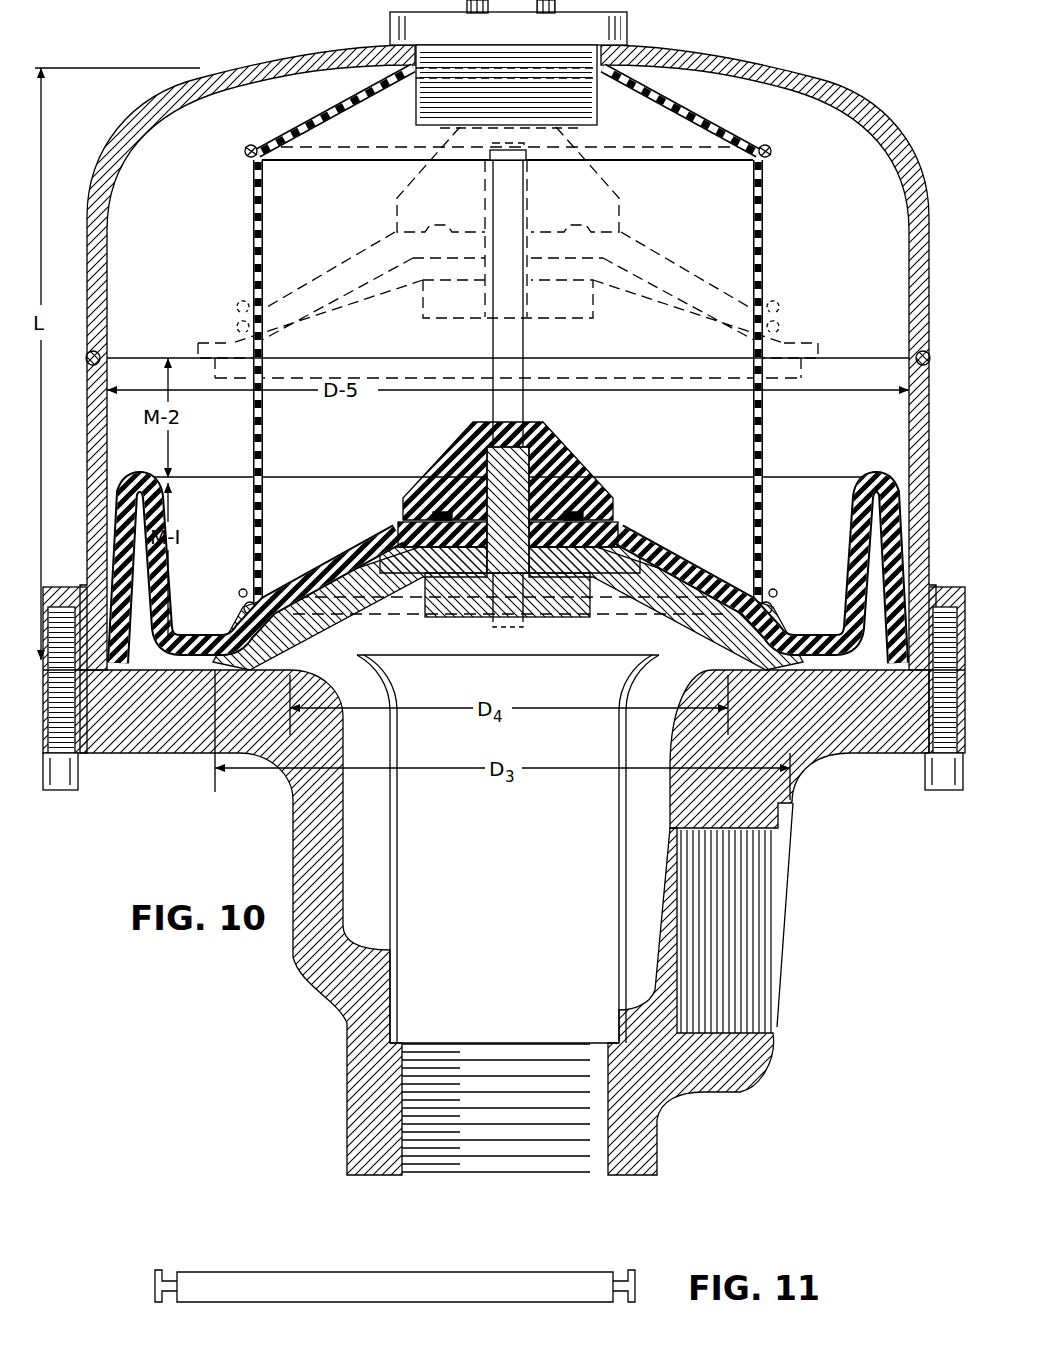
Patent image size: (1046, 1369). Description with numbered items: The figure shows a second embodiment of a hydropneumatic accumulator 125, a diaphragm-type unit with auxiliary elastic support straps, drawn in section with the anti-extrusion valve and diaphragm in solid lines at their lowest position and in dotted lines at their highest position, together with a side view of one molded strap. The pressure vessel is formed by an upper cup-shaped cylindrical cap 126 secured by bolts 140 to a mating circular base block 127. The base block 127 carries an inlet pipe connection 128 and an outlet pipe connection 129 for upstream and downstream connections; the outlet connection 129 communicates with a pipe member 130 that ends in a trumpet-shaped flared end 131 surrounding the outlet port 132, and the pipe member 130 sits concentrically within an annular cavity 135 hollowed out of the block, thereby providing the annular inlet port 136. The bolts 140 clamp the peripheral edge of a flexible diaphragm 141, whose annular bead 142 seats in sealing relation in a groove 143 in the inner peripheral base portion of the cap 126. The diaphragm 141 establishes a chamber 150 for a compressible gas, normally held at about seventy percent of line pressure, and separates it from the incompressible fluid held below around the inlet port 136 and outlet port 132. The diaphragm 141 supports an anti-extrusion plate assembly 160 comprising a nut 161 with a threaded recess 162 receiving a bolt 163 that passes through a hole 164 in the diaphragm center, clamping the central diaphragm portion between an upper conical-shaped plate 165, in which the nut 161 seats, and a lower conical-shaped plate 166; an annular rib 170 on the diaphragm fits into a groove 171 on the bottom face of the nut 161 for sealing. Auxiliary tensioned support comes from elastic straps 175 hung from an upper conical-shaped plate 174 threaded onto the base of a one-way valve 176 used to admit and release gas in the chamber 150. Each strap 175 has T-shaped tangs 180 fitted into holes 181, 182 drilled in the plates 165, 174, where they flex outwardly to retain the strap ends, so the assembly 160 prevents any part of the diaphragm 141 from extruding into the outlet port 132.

In FIG. 10, the hydropneumatic accumulator 125 is at (193, 75).
In FIG. 10, the upper cup-shaped cylindrical cap 126 is at (88, 444).
In FIG. 10, the circular base block 127 is at (838, 750).
In FIG. 10, the inlet pipe connection 128 is at (778, 905).
In FIG. 10, the outlet pipe connection 129 is at (583, 1180).
In FIG. 10, the pipe member 130 is at (618, 829).
In FIG. 10, the trumpet-shaped flared end 131 is at (368, 658).
In FIG. 10, the outlet port 132 is at (574, 654).
In FIG. 10, the annular cavity 135 is at (386, 805).
In FIG. 10, the annular inlet port 136 is at (346, 666).
In FIG. 10, the bolts 140 is at (78, 780).
In FIG. 10, the flexible diaphragm 141 is at (155, 626).
In FIG. 10, the annular bead 142 is at (94, 652).
In FIG. 10, the groove 143 is at (86, 587).
In FIG. 10, the chamber 150 is at (330, 221).
In FIG. 10, the anti-extrusion plate assembly 160 is at (614, 194).
In FIG. 10, the nut 161 is at (562, 445).
In FIG. 10, the threaded recess 162 is at (488, 460).
In FIG. 10, the bolt 163 is at (500, 582).
In FIG. 10, the hole 164 is at (425, 601).
In FIG. 10, the upper conical-shaped plate 165 is at (672, 560).
In FIG. 10, the lower conical-shaped plate 166 is at (265, 656).
In FIG. 10, the annular rib 170 is at (400, 528).
In FIG. 10, the groove 171 is at (452, 228).
In FIG. 10, the upper conical-shaped plate 174 is at (345, 110).
In FIG. 10, the elastic straps 175 is at (254, 257).
In FIG. 11, the elastic straps 175 is at (288, 1276).
In FIG. 10, the valve 176 is at (416, 105).
In FIG. 10, the T-shaped tangs 180 is at (253, 146).
In FIG. 11, the T-shaped tangs 180 is at (160, 1270).
In FIG. 10, the holes 181 is at (242, 591).
In FIG. 10, the holes 182 is at (259, 160).